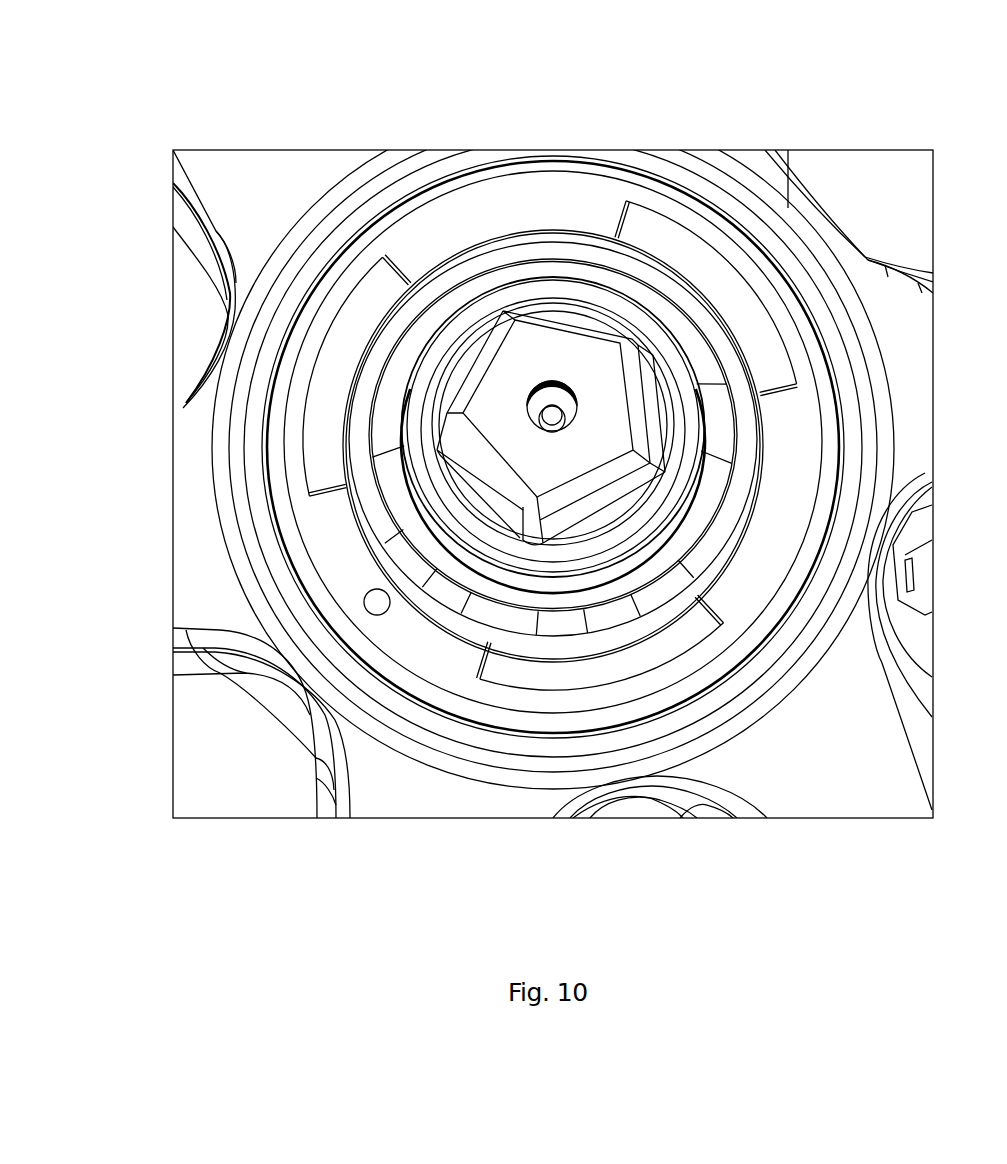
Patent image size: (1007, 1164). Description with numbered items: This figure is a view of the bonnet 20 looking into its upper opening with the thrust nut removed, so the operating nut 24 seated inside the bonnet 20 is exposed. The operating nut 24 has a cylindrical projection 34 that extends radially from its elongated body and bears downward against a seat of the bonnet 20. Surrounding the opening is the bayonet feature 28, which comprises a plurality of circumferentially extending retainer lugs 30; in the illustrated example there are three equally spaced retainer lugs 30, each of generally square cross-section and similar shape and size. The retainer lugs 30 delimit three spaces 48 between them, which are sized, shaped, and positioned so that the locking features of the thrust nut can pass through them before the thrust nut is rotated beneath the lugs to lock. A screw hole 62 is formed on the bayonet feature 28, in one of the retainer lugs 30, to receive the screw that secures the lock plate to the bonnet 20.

The bonnet 20 is at (773, 208).
The operating nut 24 is at (600, 364).
The bayonet feature 28 is at (643, 173).
The retainer lugs 30 is at (459, 227).
The cylindrical projection 34 is at (445, 328).
The spaces 48 is at (342, 348).
The screw hole 62 is at (377, 602).